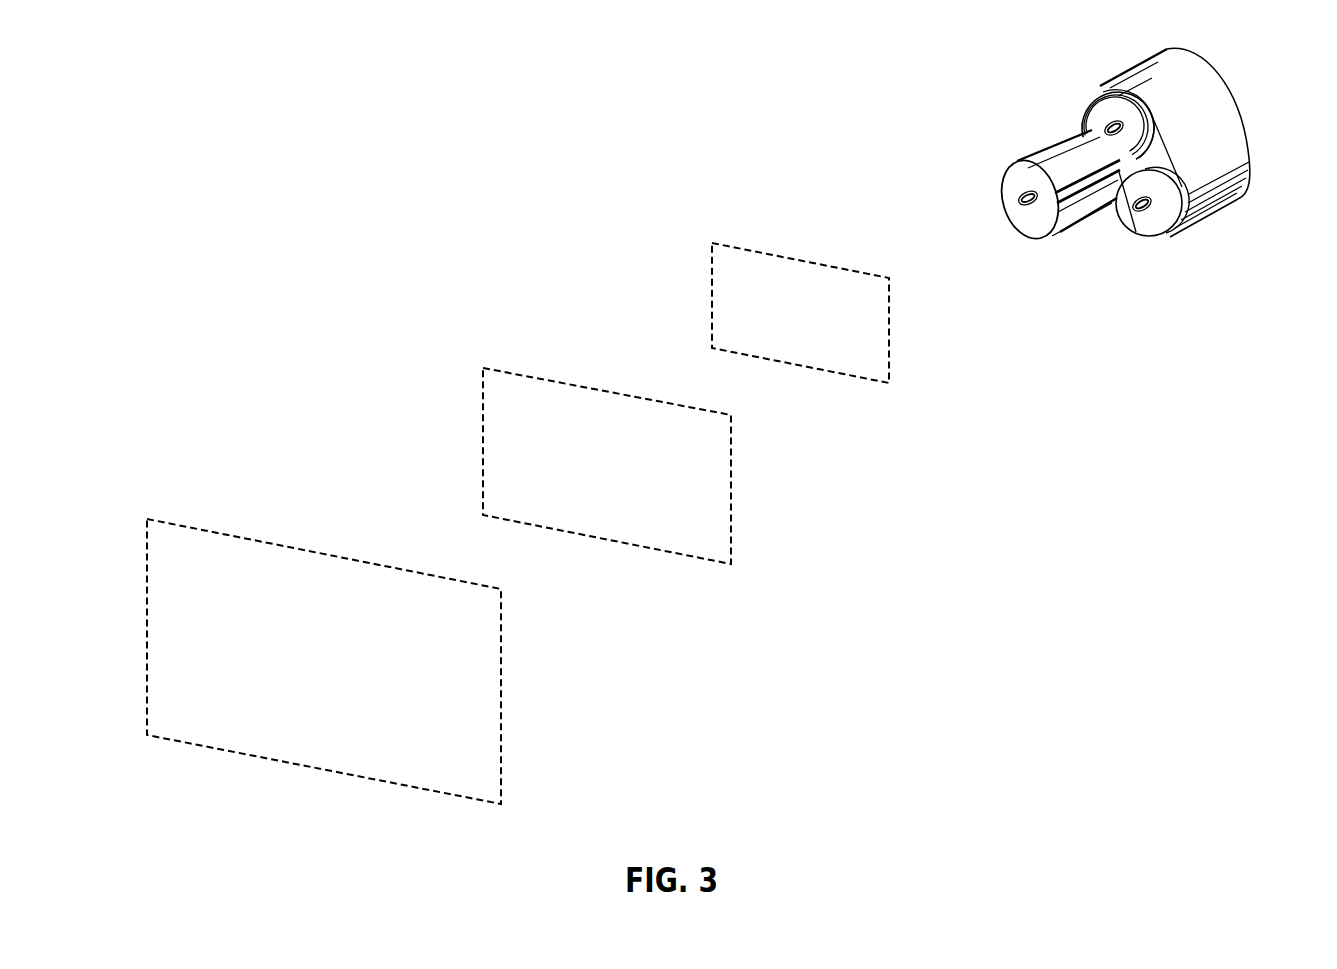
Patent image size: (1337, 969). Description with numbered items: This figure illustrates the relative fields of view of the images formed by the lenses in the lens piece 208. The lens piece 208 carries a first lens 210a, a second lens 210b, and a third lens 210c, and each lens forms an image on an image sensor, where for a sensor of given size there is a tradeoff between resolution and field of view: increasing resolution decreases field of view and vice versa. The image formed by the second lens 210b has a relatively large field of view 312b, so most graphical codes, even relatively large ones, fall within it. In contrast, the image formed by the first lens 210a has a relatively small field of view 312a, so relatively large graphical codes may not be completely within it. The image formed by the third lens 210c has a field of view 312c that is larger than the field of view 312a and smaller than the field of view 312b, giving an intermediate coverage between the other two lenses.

The lens piece 208 is at (1238, 118).
The first lens 210a is at (1026, 203).
The second lens 210b is at (1112, 126).
The third lens 210c is at (1141, 210).
The field of view 312a is at (889, 356).
The field of view 312b is at (502, 769).
The field of view 312c is at (731, 534).